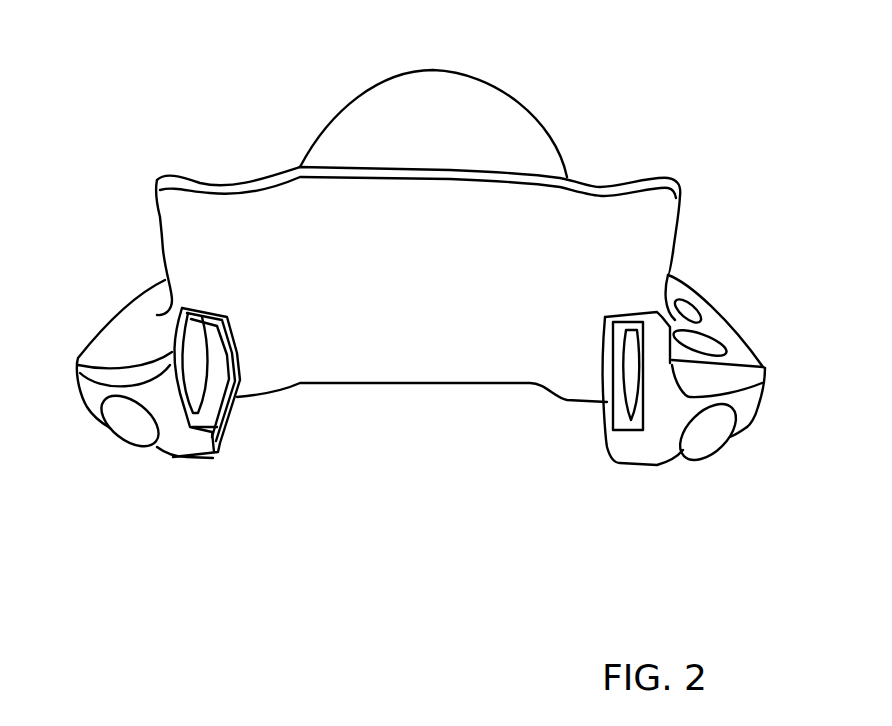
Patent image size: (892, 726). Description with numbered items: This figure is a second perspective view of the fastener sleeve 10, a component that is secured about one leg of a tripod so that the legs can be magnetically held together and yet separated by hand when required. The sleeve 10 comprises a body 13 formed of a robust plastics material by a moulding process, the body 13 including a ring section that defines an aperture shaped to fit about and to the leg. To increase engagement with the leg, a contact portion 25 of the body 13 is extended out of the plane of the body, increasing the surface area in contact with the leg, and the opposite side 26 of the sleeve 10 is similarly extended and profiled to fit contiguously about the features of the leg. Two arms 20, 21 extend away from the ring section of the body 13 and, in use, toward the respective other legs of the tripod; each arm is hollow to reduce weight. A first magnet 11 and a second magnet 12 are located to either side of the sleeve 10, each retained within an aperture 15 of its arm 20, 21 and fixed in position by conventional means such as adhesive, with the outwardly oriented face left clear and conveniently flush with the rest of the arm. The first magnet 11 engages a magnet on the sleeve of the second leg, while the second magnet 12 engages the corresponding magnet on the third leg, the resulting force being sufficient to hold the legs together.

The fastener sleeve 10 is at (425, 271).
The contact portion 25 is at (332, 115).
The opposite side 26 is at (413, 388).
The body 13 is at (113, 312).
The arm 21 is at (80, 393).
The second magnet 12 is at (133, 443).
The arm 20 is at (745, 418).
The aperture 15 is at (692, 443).
The first magnet 11 is at (713, 455).